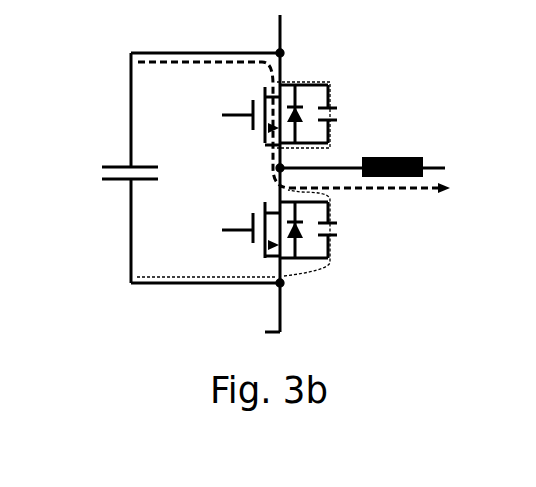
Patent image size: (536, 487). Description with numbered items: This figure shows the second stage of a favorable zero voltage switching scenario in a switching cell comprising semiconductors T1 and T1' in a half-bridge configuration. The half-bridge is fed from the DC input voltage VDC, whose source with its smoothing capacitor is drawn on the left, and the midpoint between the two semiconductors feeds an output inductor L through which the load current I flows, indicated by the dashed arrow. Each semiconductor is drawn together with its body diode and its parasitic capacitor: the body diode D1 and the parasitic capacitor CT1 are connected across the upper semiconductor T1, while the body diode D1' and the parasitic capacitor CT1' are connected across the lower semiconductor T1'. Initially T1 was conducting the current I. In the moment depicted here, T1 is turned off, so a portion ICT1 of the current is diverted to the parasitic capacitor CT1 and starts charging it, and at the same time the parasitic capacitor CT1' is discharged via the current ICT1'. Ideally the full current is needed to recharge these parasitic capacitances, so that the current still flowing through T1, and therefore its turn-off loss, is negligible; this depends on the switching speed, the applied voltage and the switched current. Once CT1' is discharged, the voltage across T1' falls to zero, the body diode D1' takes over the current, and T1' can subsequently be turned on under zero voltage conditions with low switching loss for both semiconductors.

The input voltage VDC is at (85, 132).
The semiconductor T1 is at (240, 111).
The semiconductor T1' is at (240, 223).
The body diode D1 is at (304, 100).
The body diode D1' is at (308, 247).
The parasitic capacitor CT1 is at (347, 102).
The parasitic capacitor CT1' is at (361, 236).
The current portion ICT1 is at (371, 102).
The current ICT1' is at (373, 229).
The inductor L is at (385, 157).
The current I is at (395, 190).